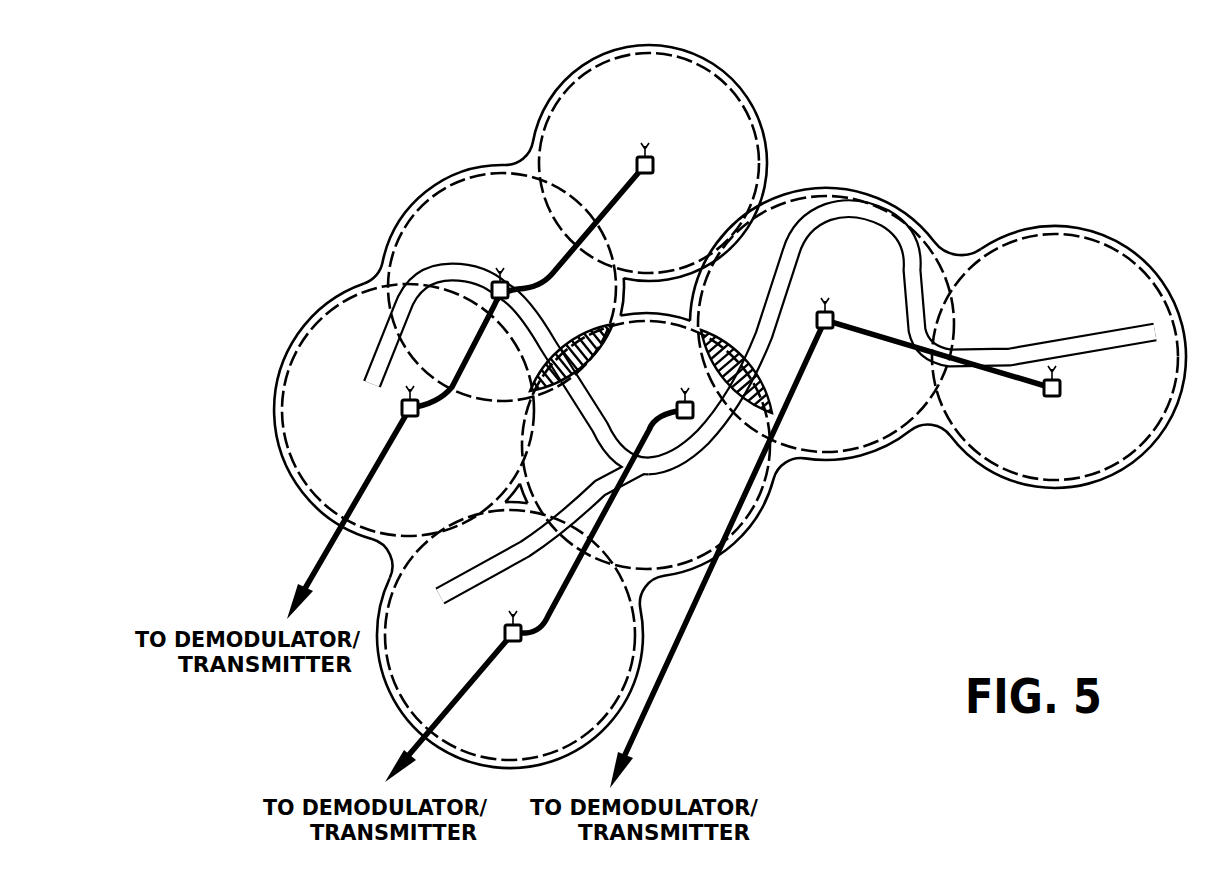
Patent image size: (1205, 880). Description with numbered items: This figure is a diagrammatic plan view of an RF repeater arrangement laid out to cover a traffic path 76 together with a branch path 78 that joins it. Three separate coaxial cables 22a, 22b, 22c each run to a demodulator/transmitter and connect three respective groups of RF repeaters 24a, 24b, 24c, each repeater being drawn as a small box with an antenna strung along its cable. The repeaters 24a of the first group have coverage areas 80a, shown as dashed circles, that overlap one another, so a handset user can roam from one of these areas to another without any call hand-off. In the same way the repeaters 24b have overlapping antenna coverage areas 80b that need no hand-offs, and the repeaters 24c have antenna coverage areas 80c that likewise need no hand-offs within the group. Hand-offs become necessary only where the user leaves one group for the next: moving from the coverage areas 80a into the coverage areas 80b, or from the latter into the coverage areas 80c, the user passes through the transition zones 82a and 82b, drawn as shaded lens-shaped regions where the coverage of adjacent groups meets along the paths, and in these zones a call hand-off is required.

The coaxial cable 22a is at (376, 473).
The coaxial cable 22b is at (470, 699).
The coaxial cable 22c is at (656, 705).
The RF repeaters 24a is at (656, 166).
The RF repeaters 24b is at (675, 404).
The RF repeaters 24c is at (828, 336).
The traffic path 76 is at (802, 256).
The branch path 78 is at (537, 324).
The coverage areas 80a is at (576, 186).
The antenna coverage areas 80b is at (536, 497).
The antenna coverage areas 80c is at (798, 190).
The transition zone 82a is at (540, 371).
The transition zone 82b is at (740, 338).